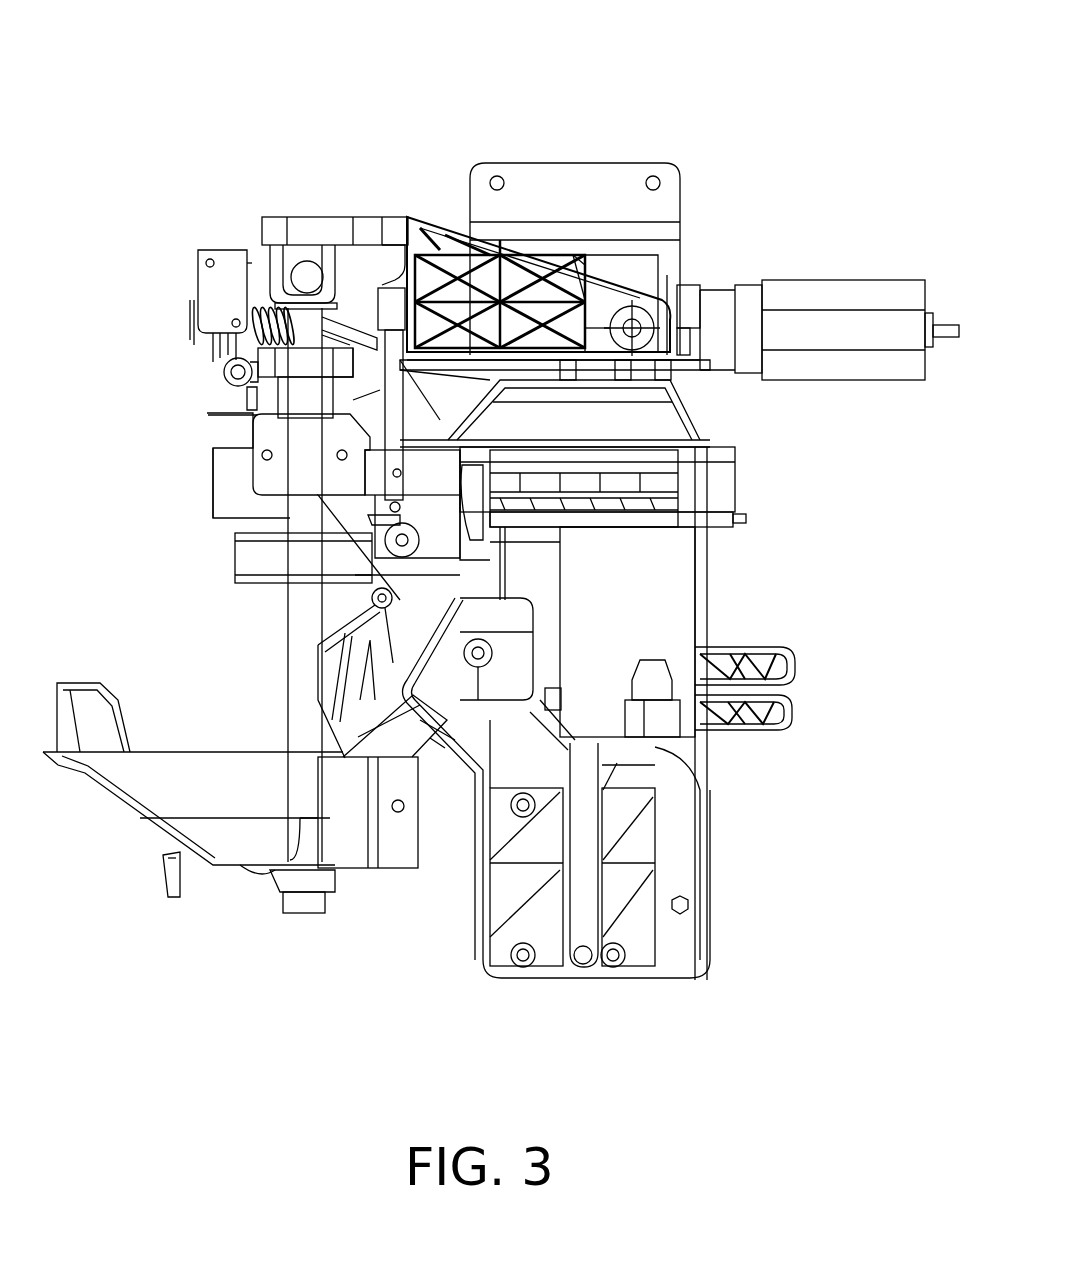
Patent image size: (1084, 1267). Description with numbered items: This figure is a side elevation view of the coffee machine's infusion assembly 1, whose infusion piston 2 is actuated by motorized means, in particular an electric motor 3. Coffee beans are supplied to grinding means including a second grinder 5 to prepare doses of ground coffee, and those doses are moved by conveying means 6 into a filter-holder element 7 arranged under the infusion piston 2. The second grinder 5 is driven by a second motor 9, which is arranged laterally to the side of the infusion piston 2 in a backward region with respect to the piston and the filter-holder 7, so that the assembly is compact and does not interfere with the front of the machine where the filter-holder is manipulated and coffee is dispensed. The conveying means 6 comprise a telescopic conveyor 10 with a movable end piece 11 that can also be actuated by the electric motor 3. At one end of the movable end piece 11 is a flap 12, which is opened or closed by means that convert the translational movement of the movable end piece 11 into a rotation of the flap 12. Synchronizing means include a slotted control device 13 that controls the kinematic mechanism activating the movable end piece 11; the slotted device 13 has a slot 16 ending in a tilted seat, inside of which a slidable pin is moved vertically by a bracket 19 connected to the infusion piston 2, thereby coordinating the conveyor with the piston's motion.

The infusion assembly 1 is at (768, 78).
The infusion piston 2 is at (258, 550).
The electric motor 3 is at (845, 293).
The second grinder 5 is at (640, 413).
The conveying means 6 is at (434, 750).
The filter-holder element 7 is at (143, 776).
The second motor 9 is at (650, 573).
The telescopic conveyor 10 is at (392, 714).
The movable end piece 11 is at (355, 705).
The flap 12 is at (330, 660).
The slotted control device 13 is at (767, 730).
The slot 16 is at (733, 690).
The bracket 19 is at (296, 465).